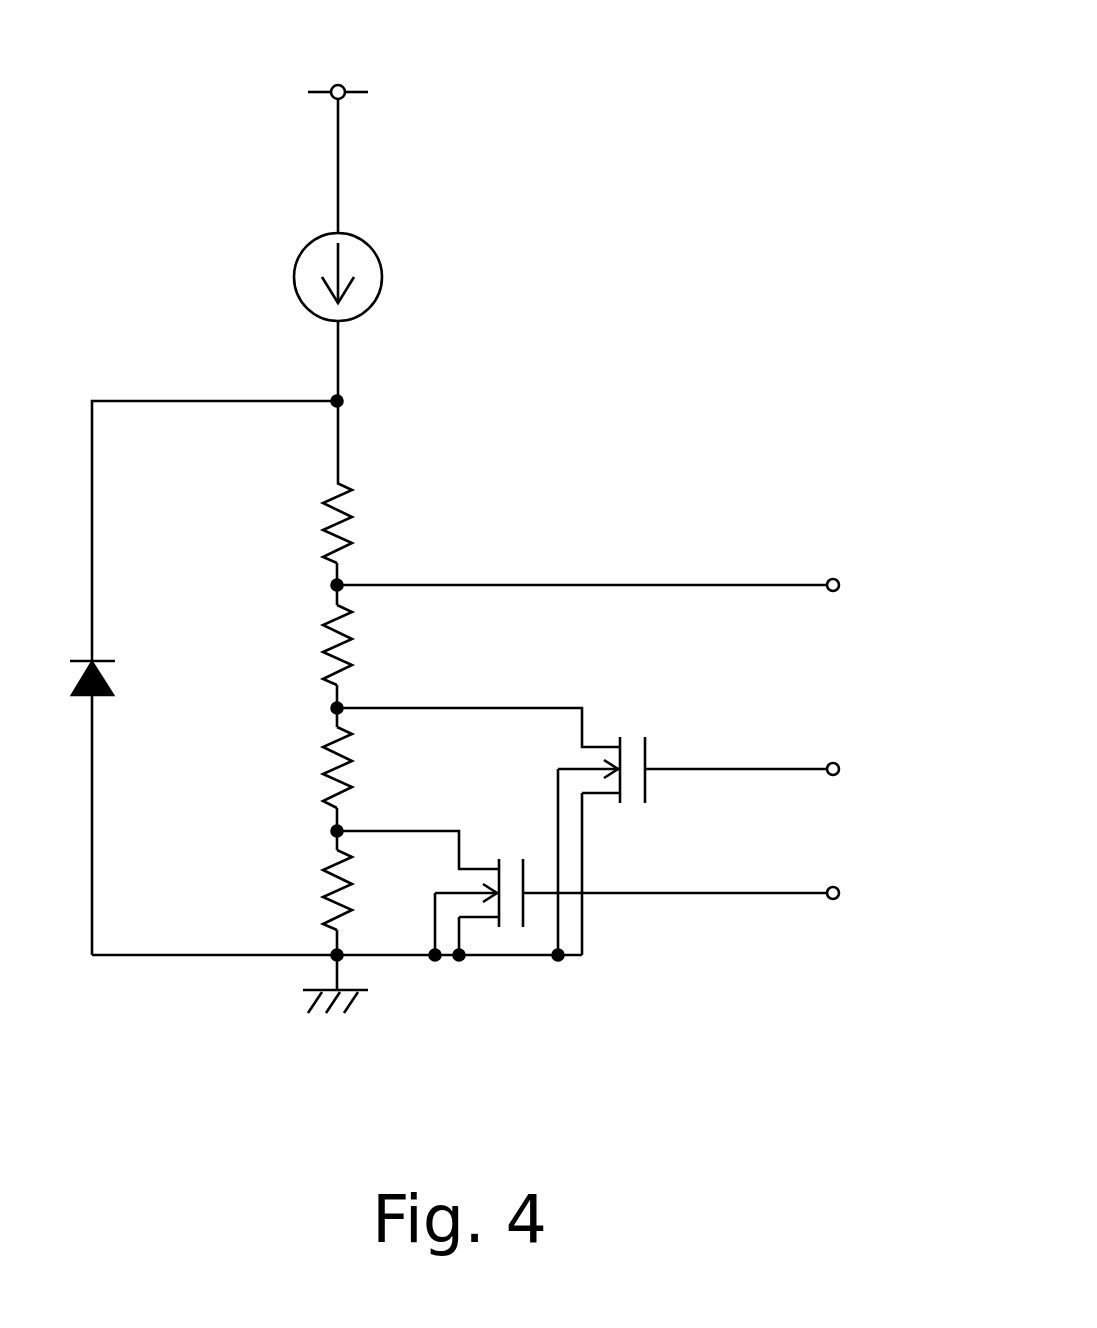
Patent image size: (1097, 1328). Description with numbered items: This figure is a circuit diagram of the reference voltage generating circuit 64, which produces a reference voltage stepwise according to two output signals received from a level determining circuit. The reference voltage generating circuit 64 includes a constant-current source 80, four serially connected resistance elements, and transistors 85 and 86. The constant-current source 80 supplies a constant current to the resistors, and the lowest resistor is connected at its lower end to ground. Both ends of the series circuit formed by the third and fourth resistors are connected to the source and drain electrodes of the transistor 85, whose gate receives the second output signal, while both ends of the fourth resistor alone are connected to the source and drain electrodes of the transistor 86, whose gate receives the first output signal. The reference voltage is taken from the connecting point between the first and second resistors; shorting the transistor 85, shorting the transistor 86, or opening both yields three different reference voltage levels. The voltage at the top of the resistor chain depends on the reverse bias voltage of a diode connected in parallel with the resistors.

The reference voltage generating circuit 64 is at (760, 126).
The constant-current source 80 is at (376, 250).
The transistor 85 is at (636, 732).
The transistor 86 is at (511, 850).